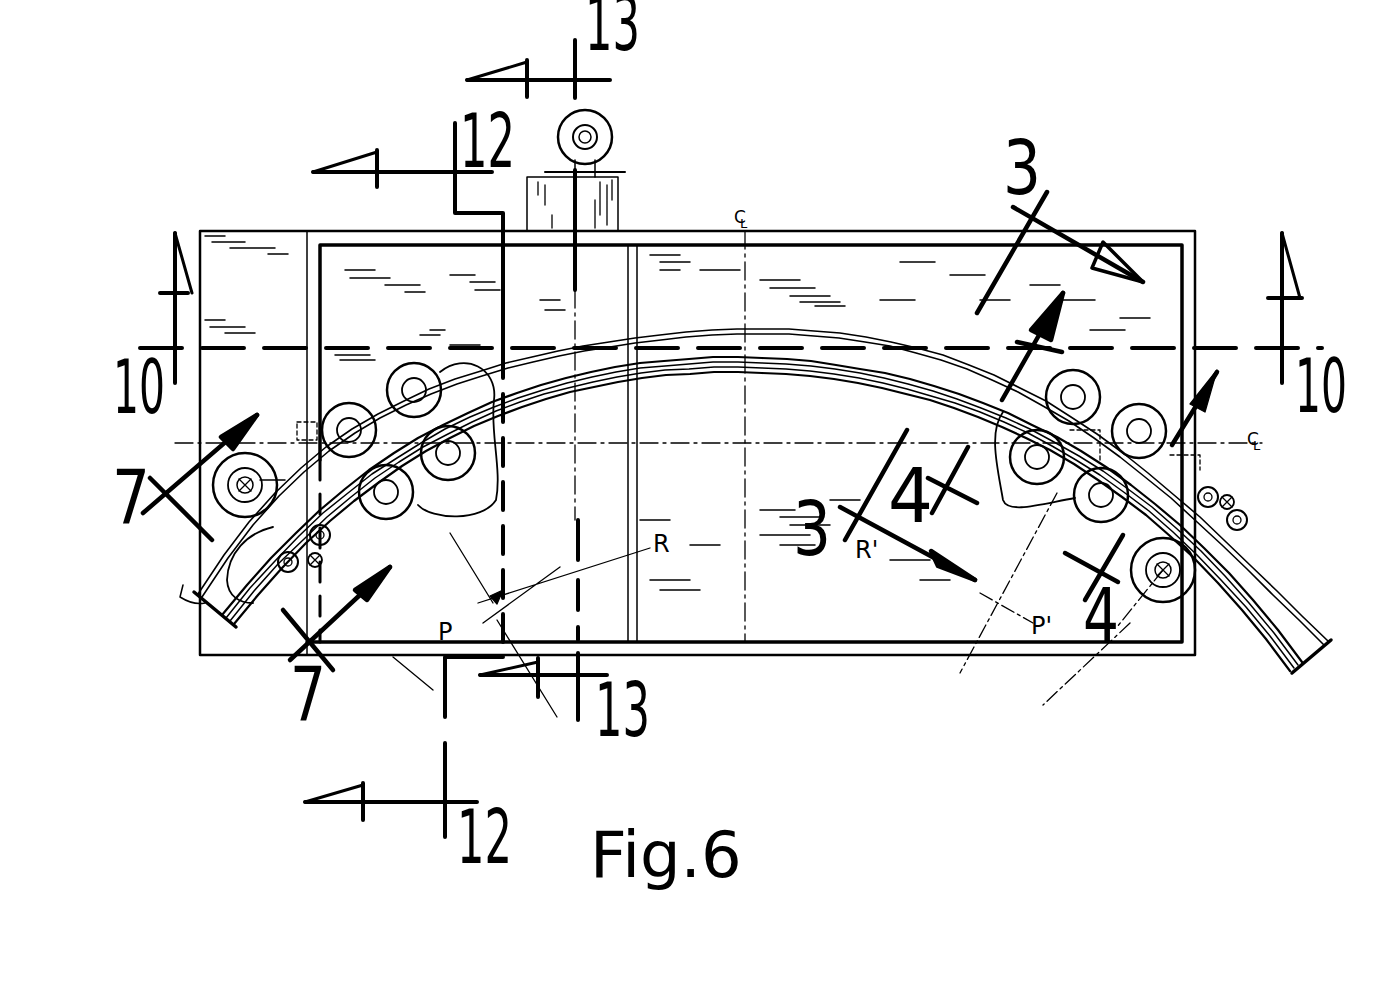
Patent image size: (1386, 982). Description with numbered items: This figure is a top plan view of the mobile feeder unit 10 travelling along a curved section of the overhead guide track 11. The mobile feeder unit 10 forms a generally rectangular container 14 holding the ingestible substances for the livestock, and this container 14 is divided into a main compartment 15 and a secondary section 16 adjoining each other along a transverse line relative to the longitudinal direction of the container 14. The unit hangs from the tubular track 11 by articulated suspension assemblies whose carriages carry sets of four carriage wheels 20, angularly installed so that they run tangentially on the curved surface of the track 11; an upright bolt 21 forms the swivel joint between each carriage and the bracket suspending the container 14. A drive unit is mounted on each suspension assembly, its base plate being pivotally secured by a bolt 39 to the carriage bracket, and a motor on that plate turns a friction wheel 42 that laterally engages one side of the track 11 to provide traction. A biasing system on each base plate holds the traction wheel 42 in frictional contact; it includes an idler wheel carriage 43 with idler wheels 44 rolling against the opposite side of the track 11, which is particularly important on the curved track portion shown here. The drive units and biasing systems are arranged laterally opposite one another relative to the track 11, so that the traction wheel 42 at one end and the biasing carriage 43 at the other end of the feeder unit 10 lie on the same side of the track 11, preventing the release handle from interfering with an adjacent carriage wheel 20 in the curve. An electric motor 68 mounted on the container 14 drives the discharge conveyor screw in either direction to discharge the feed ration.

The mobile feeder unit 10 is at (858, 229).
The overhead guide track 11 is at (688, 346).
The container 14 is at (905, 240).
The main compartment 15 is at (832, 278).
The secondary section 16 is at (393, 262).
The carriage wheels 20 is at (472, 508).
The upright bolt 21 is at (382, 420).
The bolt 39 is at (300, 454).
The friction wheel 42 is at (247, 512).
The idler wheel carriage 43 is at (330, 562).
The idler wheels 44 is at (290, 576).
The electric motor 68 is at (600, 118).